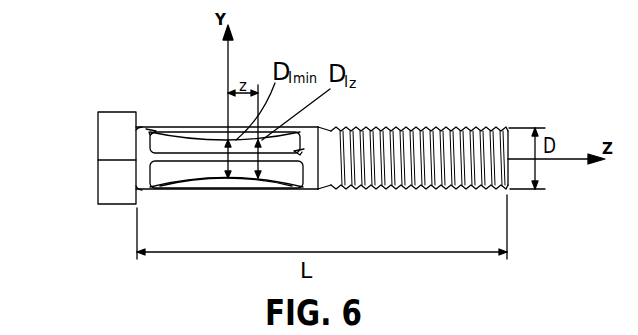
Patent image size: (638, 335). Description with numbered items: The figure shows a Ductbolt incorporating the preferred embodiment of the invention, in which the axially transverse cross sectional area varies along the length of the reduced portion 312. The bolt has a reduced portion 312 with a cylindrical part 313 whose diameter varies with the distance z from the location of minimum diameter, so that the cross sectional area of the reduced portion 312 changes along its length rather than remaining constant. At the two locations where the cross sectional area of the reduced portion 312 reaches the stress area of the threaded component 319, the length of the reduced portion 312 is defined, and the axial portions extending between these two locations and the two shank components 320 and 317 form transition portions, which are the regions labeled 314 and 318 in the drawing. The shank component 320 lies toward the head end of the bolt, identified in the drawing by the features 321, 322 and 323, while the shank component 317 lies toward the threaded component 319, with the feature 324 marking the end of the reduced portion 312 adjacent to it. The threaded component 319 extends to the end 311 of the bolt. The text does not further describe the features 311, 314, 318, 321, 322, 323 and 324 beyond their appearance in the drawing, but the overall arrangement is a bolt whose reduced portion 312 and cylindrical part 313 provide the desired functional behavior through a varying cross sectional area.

The threaded end of bolt 311 is at (507, 175).
The reduced portion 312 is at (218, 188).
The cylindrical part 313 is at (242, 187).
The transition surfaces 314 is at (205, 183).
The shank component 317 is at (311, 189).
The thread runout 318 is at (325, 189).
The threaded component 319 is at (390, 124).
The shank component 320 is at (141, 191).
The head-shank transition 321 is at (136, 128).
The bolt head 322 is at (98, 176).
The recess edge 323 is at (148, 131).
The recess edge 324 is at (301, 150).